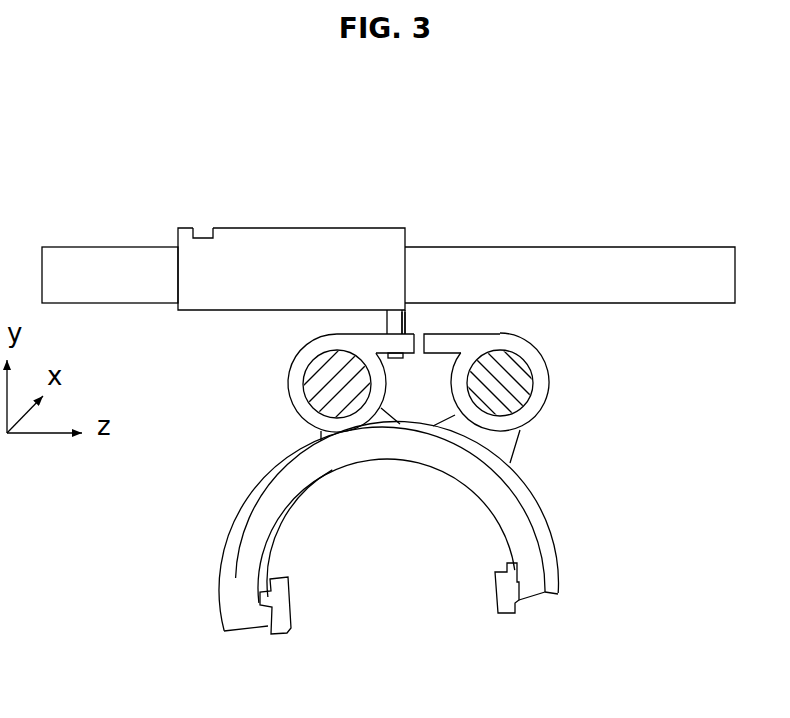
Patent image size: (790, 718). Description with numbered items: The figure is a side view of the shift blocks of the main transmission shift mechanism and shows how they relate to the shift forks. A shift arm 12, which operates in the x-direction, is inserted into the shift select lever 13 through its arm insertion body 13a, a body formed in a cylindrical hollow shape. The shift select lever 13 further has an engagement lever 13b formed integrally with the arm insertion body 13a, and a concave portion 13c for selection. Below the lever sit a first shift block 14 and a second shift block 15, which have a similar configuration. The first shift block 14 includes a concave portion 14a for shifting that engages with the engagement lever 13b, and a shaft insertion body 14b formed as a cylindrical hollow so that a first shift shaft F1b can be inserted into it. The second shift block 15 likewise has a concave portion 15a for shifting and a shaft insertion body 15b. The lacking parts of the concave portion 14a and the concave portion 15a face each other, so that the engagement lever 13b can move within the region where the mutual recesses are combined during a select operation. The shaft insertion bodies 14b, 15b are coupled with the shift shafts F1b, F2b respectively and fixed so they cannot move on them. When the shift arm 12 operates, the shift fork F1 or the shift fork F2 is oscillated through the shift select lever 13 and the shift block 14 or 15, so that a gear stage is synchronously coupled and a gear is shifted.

The shift arm 12 is at (598, 266).
The shift select lever 13 is at (205, 266).
The arm insertion body 13a is at (271, 281).
The engagement lever 13b is at (393, 328).
The concave portion for selection 13c is at (203, 231).
The first shift block 14 is at (285, 378).
The concave portion for shifting 14a is at (403, 290).
The shaft insertion body 14b is at (289, 397).
The second shift block 15 is at (551, 368).
The concave portion for shifting 15a is at (448, 333).
The shaft insertion body 15b is at (542, 378).
The shift fork F1 is at (221, 565).
The first shift shaft F1b is at (320, 402).
The shift fork F2 is at (568, 546).
The shift shaft F2b is at (533, 398).